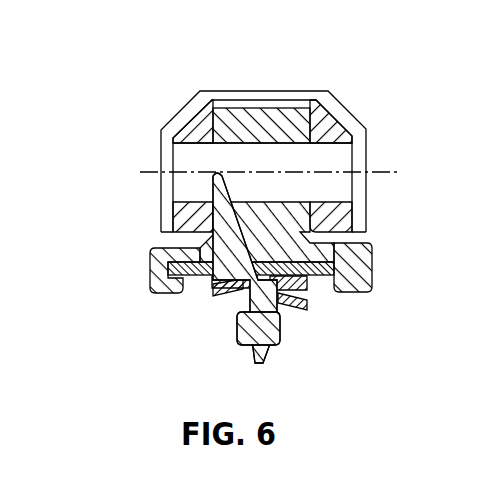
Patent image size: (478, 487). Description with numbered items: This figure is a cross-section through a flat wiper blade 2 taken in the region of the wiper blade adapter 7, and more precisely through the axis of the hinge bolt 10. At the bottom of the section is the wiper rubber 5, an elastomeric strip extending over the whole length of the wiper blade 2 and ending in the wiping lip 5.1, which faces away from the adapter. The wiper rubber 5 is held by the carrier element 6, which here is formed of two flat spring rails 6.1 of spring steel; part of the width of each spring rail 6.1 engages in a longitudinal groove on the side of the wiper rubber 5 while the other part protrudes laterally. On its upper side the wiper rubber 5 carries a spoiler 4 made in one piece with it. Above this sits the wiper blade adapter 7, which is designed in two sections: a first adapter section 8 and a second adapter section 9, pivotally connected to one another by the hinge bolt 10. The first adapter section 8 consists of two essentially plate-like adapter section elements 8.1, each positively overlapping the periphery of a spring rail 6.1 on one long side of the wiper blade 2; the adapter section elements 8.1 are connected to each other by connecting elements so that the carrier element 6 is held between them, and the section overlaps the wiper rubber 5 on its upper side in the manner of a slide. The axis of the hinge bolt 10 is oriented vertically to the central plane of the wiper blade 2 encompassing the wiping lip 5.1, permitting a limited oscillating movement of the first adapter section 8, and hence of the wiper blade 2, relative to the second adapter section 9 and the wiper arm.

The wiper blade 2 is at (143, 303).
The spoiler 4 is at (240, 218).
The wiper rubber 5 is at (250, 325).
The wiping lip 5.1 is at (268, 345).
The carrier element 6 is at (259, 293).
The spring rails 6.1 is at (198, 265).
The wiper blade adapter 7 is at (168, 106).
The first adapter section 8 is at (285, 240).
The adapter section elements 8.1 is at (231, 123).
The second adapter section 9 is at (325, 123).
The hinge bolt 10 is at (328, 152).